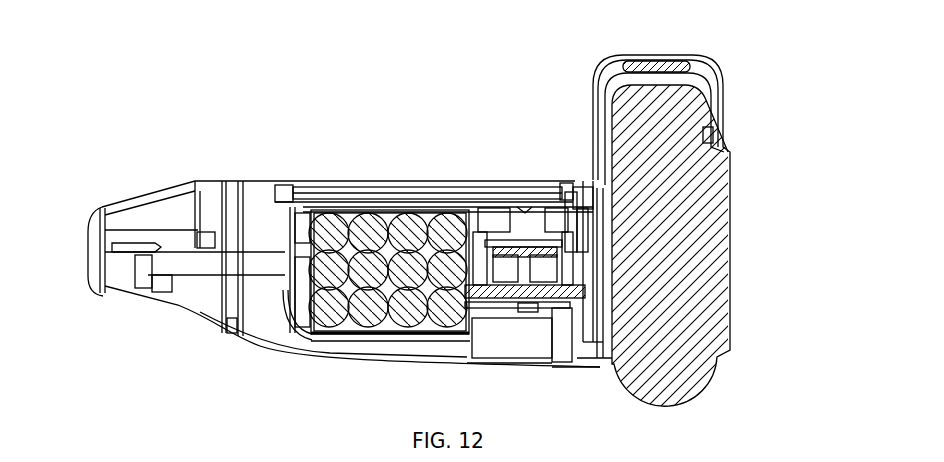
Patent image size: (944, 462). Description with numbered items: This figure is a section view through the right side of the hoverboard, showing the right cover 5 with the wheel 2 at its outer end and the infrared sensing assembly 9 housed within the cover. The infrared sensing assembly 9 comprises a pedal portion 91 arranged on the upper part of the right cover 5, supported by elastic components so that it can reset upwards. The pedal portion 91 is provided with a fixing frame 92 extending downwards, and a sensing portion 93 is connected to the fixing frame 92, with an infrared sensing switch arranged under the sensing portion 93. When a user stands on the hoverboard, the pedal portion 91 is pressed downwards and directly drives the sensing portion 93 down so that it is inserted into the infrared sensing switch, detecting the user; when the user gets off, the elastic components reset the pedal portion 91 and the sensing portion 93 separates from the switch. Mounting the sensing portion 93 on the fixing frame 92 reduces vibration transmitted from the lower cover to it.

The wheel 2 is at (698, 244).
The right cover 5 is at (226, 178).
The infrared sensing assembly 9 is at (570, 108).
The pedal portion 91 is at (412, 168).
The fixing frame 92 is at (500, 208).
The sensing portion 93 is at (528, 250).